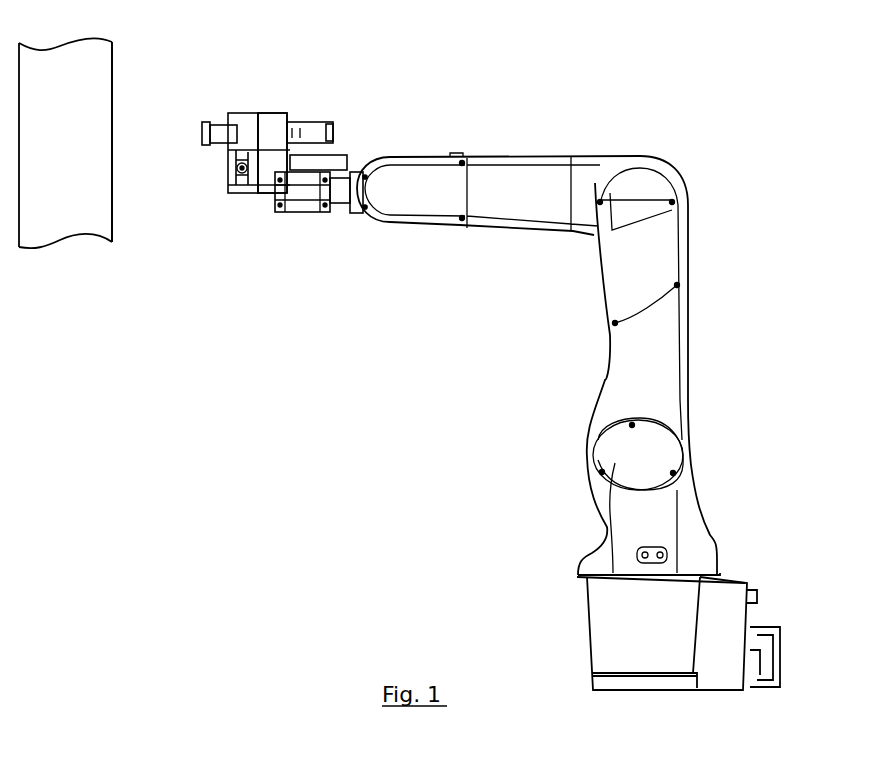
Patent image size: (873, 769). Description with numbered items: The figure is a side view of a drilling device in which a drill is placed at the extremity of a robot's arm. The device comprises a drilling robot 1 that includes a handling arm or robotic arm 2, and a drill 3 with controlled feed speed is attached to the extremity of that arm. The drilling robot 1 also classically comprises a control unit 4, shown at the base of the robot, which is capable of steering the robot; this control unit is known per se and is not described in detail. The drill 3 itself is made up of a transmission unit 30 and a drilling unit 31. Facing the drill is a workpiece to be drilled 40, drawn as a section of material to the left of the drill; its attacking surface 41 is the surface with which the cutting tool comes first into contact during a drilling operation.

The drilling robot 1 is at (703, 125).
The robotic arm 2 is at (673, 261).
The drill 3 is at (294, 175).
The transmission unit 30 is at (288, 215).
The drilling unit 31 is at (285, 108).
The control unit 4 is at (752, 580).
The workpiece to be drilled 40 is at (62, 232).
The attacking surface 41 is at (112, 217).